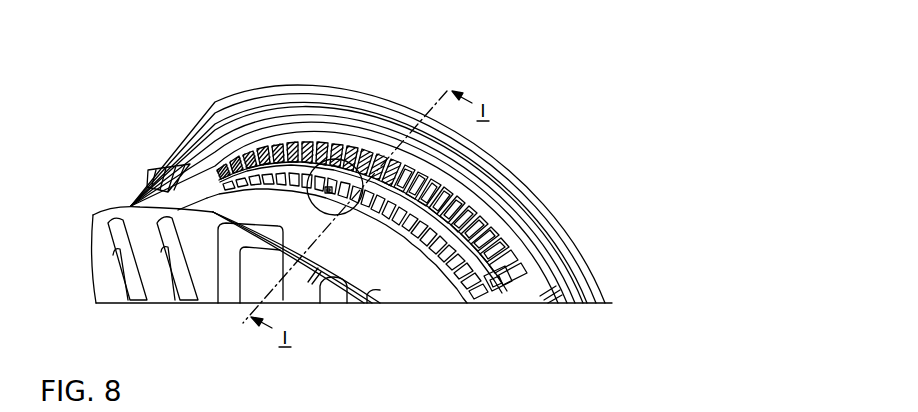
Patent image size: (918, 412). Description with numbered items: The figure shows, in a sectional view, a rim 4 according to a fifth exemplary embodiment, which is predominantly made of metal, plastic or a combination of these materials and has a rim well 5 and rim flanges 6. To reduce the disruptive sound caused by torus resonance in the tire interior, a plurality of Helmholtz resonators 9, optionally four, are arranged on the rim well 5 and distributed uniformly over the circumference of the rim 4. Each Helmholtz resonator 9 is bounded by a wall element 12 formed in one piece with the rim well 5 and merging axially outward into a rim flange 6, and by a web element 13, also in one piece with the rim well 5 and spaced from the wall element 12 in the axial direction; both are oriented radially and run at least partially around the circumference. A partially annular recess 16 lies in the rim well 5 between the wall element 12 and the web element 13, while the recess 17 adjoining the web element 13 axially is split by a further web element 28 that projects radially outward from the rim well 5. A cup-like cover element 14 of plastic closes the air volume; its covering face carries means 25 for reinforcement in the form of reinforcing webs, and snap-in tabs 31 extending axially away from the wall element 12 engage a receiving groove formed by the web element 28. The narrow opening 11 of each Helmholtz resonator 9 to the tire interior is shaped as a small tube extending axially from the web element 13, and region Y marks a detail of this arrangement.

The rim 4 is at (181, 103).
The rim well 5 is at (423, 289).
The rim flange 6 is at (507, 175).
The Helmholtz resonator 9 is at (162, 167).
The opening 11 is at (327, 210).
The wall element 12 is at (517, 253).
The web element 13 is at (490, 298).
The cover element 14 is at (458, 230).
The recess 16 is at (515, 301).
The recess 17 is at (249, 187).
The means for reinforcement 25 is at (339, 150).
The web element 28 is at (385, 223).
The snap-in tab 31 is at (403, 228).
The detail region Y is at (316, 163).